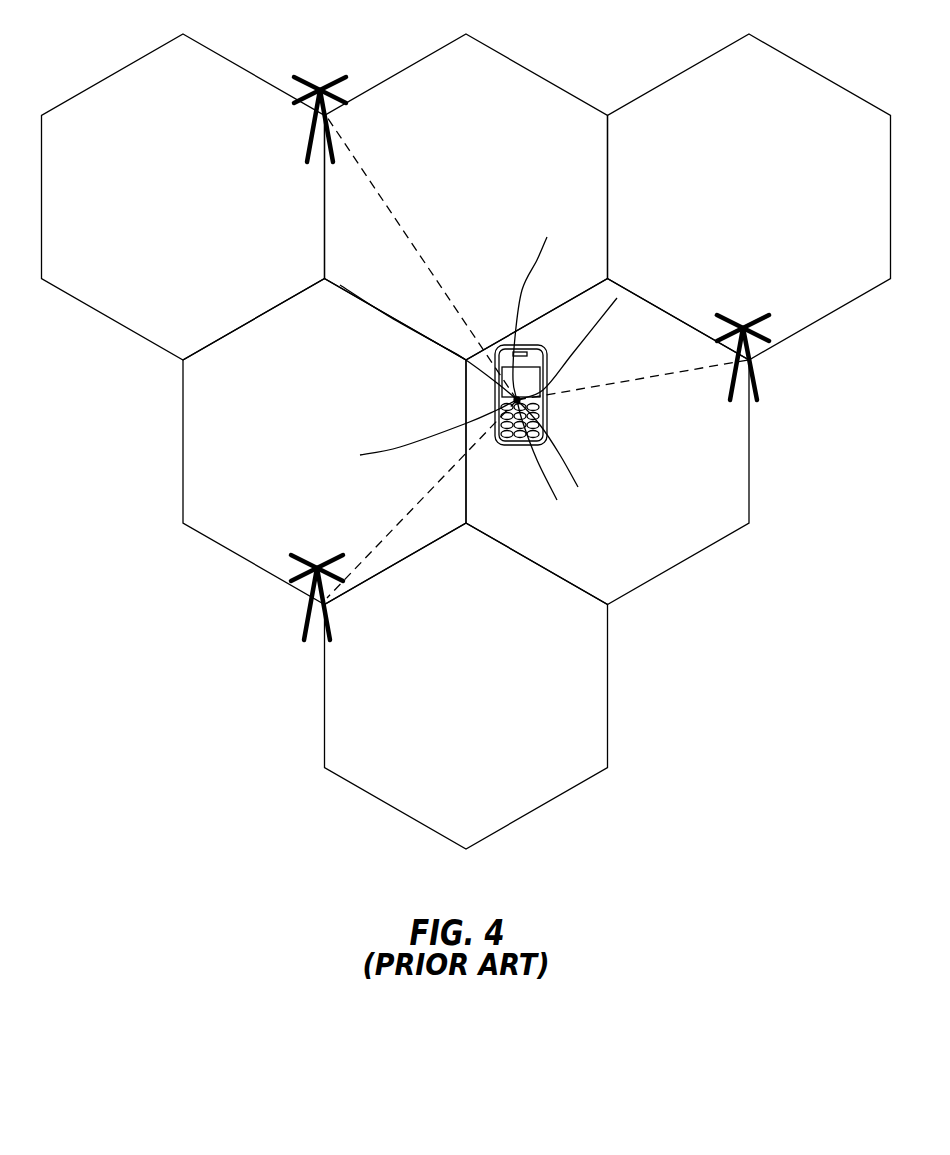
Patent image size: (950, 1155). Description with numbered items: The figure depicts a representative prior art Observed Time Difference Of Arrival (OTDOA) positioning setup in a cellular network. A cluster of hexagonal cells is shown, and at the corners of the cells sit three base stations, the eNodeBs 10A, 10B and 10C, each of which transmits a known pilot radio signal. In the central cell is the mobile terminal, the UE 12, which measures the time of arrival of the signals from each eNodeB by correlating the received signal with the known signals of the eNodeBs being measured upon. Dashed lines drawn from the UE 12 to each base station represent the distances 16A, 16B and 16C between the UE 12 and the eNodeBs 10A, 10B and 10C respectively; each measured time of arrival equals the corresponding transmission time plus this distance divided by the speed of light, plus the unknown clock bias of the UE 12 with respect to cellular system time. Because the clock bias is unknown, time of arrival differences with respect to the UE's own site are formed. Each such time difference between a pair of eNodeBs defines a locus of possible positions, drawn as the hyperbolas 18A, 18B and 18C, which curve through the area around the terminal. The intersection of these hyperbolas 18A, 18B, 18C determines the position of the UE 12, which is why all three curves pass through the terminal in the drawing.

The eNodeB 10A is at (320, 88).
The eNodeB 10B is at (743, 323).
The eNodeB 10C is at (317, 565).
The UE 12 is at (492, 397).
The distance 16A is at (380, 195).
The distance 16B is at (613, 383).
The distance 16C is at (392, 523).
The hyperbola 18A is at (400, 447).
The hyperbola 18B is at (522, 290).
The hyperbola 18C is at (570, 468).